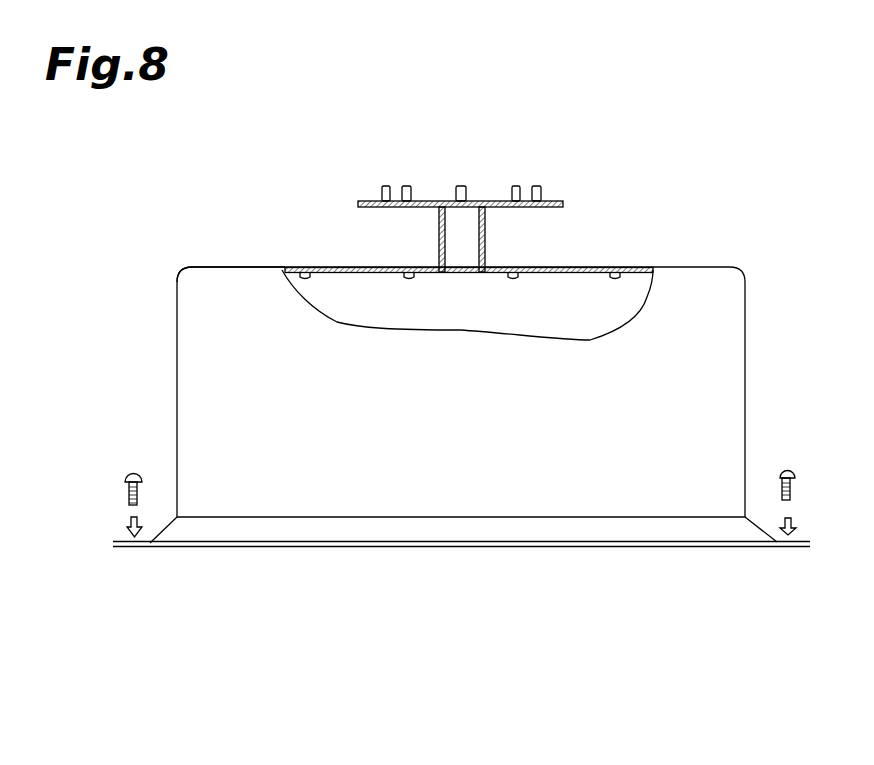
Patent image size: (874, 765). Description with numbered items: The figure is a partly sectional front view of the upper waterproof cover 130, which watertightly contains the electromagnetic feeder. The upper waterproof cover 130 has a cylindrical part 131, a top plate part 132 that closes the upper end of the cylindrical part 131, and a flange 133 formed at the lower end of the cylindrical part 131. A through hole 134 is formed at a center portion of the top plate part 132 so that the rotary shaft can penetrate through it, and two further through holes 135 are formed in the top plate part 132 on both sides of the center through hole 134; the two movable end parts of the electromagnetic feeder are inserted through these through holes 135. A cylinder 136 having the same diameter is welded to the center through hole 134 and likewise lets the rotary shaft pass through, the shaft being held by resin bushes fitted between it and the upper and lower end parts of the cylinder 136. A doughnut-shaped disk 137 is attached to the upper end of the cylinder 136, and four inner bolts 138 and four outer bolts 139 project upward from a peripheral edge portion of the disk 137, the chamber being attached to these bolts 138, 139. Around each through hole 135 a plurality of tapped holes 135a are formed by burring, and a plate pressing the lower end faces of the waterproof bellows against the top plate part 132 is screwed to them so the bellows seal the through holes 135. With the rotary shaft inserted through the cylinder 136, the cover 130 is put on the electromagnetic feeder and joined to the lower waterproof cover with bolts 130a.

The upper waterproof cover 130 is at (712, 237).
The bolts 130a is at (132, 472).
The cylindrical part 131 is at (746, 344).
The top plate part 132 is at (266, 266).
The flange 133 is at (782, 546).
The through hole 134 is at (461, 288).
The through holes 135 is at (353, 292).
The tapped holes 135a is at (303, 292).
The cylinder 136 is at (440, 248).
The doughnut-shaped disk 137 is at (563, 208).
The inner bolts 138 is at (511, 189).
The outer bolts 139 is at (381, 188).